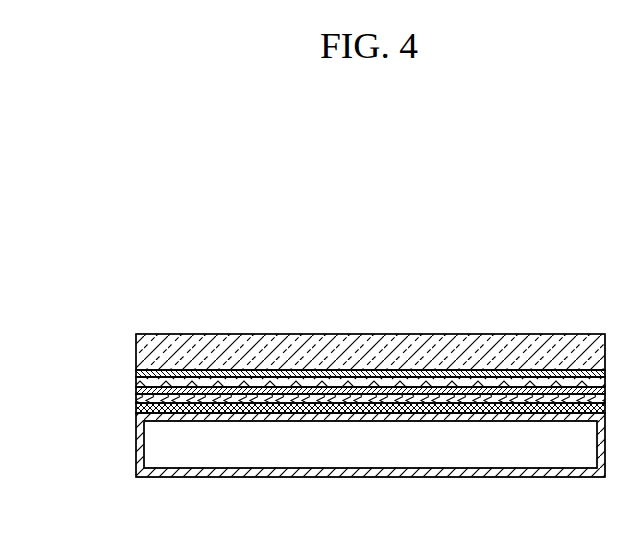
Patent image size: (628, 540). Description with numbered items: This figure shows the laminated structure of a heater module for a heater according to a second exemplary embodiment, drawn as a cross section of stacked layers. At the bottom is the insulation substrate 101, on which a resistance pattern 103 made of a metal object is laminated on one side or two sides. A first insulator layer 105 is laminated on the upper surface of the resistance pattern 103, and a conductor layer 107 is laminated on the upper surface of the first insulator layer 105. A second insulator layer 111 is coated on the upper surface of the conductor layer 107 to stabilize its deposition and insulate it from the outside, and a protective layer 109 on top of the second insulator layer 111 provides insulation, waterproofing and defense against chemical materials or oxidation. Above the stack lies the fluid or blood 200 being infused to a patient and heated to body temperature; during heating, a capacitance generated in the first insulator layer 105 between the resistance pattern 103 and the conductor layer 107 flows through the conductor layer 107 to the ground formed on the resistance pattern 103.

The fluid or blood 200 is at (136, 345).
The protective layer 109 is at (136, 373).
The second insulator layer 111 is at (136, 382).
The conductor layer 107 is at (136, 390).
The first insulator layer 105 is at (136, 399).
The resistance pattern 103 is at (136, 408).
The insulation substrate 101 is at (162, 450).